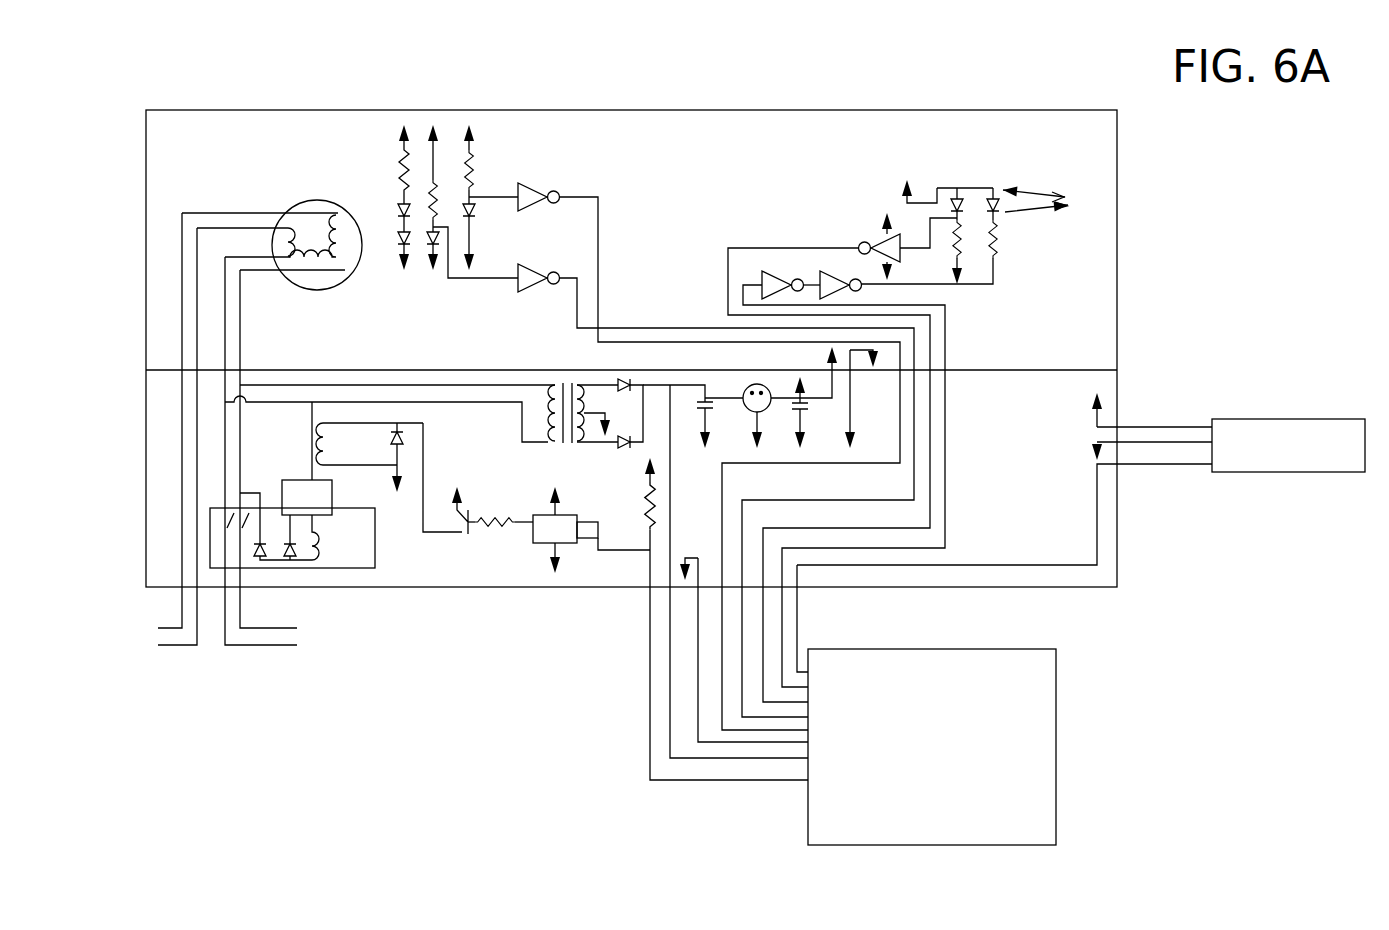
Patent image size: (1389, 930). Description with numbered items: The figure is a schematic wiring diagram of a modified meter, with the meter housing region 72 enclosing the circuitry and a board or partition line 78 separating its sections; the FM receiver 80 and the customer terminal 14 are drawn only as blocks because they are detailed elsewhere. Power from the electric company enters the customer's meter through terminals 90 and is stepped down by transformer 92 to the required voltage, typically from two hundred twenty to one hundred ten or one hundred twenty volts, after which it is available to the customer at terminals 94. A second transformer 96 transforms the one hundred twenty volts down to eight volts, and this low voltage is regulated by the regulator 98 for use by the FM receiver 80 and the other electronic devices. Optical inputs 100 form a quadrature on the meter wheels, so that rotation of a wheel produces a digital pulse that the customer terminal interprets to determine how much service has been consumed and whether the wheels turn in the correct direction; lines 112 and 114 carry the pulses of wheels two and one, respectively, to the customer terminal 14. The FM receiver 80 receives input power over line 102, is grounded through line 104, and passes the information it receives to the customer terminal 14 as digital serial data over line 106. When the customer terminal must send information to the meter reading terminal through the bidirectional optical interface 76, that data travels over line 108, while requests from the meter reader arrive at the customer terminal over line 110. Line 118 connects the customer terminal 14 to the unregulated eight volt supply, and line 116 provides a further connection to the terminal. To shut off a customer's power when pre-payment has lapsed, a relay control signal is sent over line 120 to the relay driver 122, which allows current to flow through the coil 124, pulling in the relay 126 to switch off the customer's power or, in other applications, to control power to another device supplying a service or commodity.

The customer terminal 14 is at (1040, 649).
The control circuit housing 72 is at (146, 112).
The bidirectional optical interface 76 is at (971, 173).
The circuit board 78 is at (147, 452).
The FM receiver 80 is at (1265, 419).
The terminals 90 is at (158, 641).
The transformer 92 is at (303, 203).
The terminals 94 is at (298, 640).
The second transformer 96 is at (556, 364).
The voltage regulator 98 is at (744, 381).
The optical inputs 100 is at (526, 176).
The line 102 is at (1137, 427).
The line 104 is at (1183, 442).
The line 106 is at (798, 645).
The line 108 is at (792, 690).
The line 110 is at (763, 720).
The line 112 is at (742, 718).
The line 114 is at (722, 692).
The ground line 116 is at (698, 665).
The line 118 is at (670, 645).
The line 120 is at (650, 622).
The relay driver 122 is at (528, 557).
The coil 124 is at (385, 529).
The relay 126 is at (321, 582).